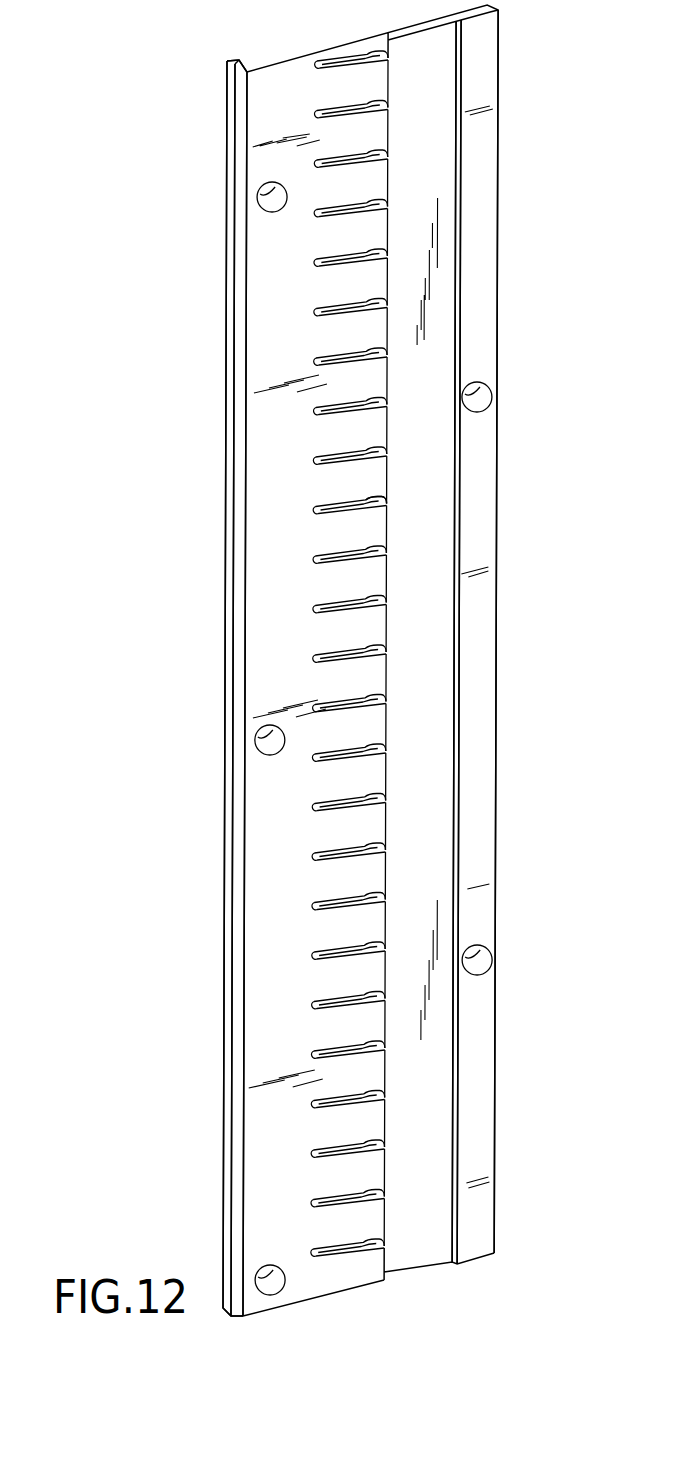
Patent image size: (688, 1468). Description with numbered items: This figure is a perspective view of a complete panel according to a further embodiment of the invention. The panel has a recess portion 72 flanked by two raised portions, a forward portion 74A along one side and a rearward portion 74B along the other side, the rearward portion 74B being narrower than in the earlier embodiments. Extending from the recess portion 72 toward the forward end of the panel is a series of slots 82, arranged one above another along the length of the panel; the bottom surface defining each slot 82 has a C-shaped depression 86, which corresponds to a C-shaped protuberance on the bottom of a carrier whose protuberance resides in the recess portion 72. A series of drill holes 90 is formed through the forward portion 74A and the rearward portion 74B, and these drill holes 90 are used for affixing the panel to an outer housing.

The recess portion 72 is at (442, 122).
The forward portion 74A is at (258, 110).
The rearward portion 74B is at (490, 62).
The slot 82 is at (385, 497).
The C-shaped depression 86 is at (377, 507).
The drill hole 90 is at (268, 210).